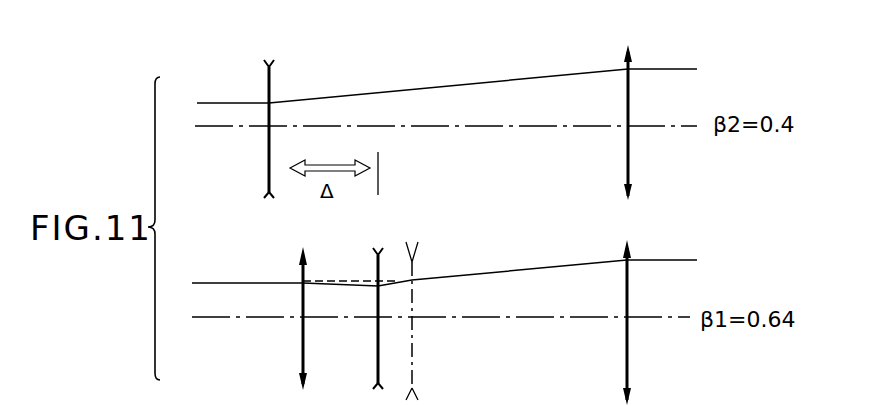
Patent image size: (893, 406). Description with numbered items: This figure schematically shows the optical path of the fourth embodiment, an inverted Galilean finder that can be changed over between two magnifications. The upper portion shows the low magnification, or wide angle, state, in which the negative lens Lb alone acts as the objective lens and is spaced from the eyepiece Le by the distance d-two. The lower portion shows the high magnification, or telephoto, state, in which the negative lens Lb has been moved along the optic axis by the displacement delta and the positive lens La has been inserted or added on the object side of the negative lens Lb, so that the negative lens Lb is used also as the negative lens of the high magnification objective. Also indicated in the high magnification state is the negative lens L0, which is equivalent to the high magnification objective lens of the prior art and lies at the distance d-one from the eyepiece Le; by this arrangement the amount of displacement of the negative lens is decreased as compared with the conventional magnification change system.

The positive lens La is at (302, 252).
The negative lens Lb is at (269, 66).
The eyepiece Le is at (628, 48).
The negative lens equivalent to high magnification objective lens L0 is at (418, 262).